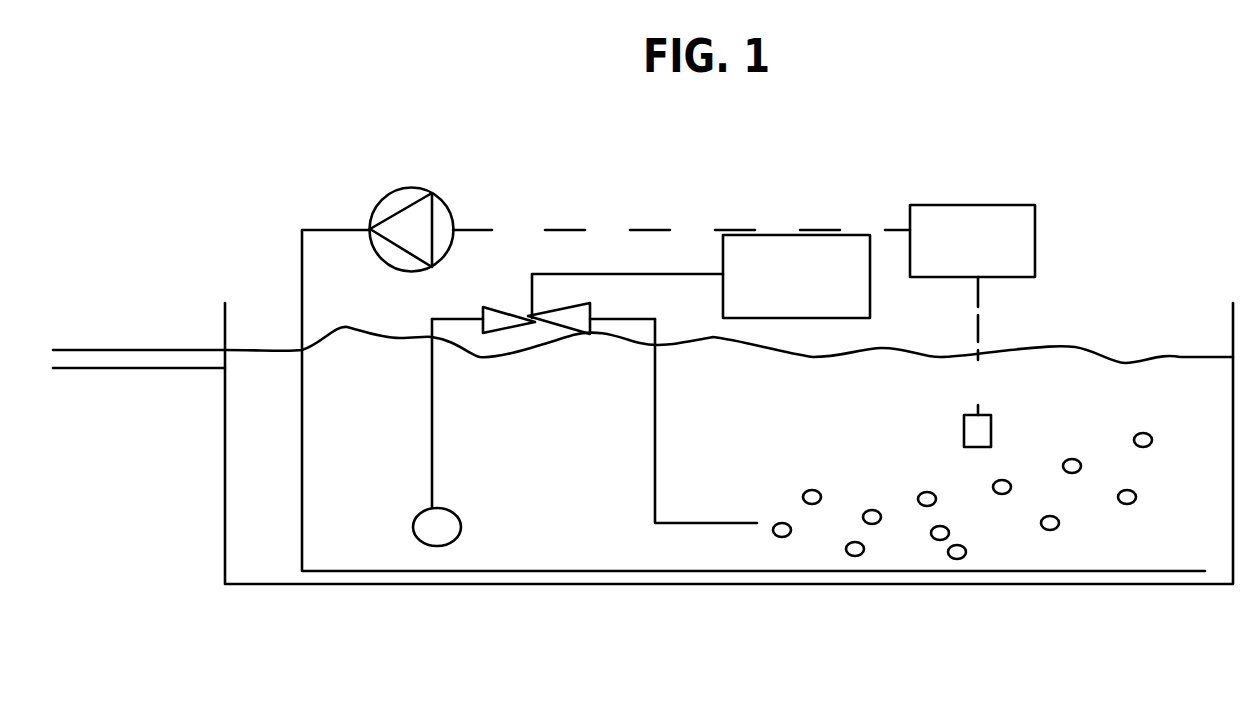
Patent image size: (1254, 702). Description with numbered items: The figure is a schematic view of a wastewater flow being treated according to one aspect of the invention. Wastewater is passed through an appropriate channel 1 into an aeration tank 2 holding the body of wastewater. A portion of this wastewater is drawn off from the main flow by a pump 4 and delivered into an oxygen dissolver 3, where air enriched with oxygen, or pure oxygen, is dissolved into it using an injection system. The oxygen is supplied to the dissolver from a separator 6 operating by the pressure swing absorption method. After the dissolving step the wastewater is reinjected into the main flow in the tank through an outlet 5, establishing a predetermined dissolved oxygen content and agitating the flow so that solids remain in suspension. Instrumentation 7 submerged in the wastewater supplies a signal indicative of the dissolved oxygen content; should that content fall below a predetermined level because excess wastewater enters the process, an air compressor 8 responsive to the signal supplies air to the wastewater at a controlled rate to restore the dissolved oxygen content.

The channel 1 is at (155, 361).
The aeration tank 2 is at (405, 591).
The oxygen dissolver 3 is at (516, 285).
The pump 4 is at (455, 548).
The outlet 5 is at (705, 528).
The separator 6 is at (782, 252).
The instrumentation 7 is at (973, 223).
The air compressor 8 is at (395, 186).